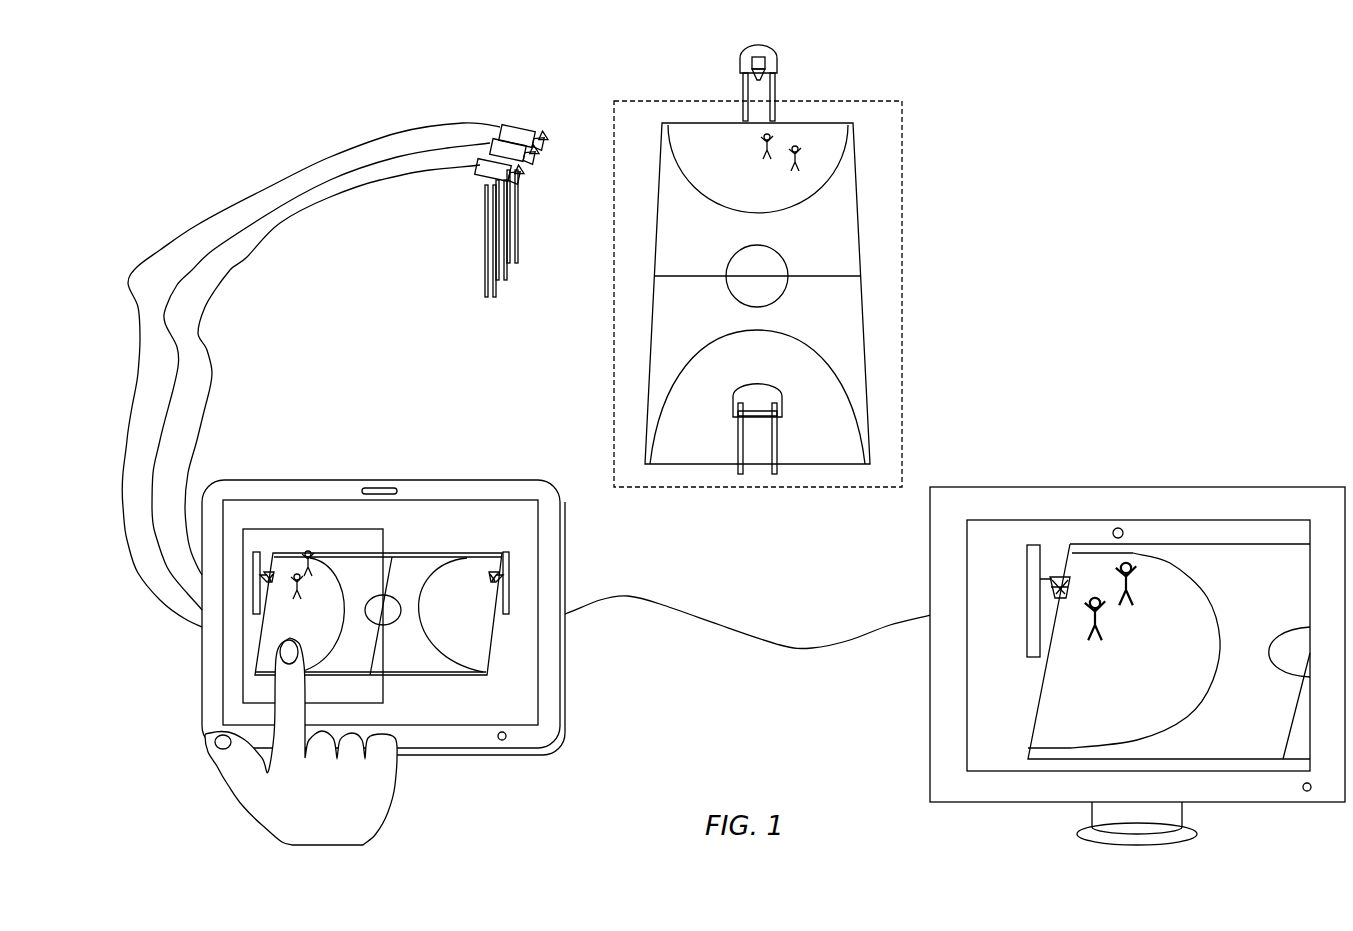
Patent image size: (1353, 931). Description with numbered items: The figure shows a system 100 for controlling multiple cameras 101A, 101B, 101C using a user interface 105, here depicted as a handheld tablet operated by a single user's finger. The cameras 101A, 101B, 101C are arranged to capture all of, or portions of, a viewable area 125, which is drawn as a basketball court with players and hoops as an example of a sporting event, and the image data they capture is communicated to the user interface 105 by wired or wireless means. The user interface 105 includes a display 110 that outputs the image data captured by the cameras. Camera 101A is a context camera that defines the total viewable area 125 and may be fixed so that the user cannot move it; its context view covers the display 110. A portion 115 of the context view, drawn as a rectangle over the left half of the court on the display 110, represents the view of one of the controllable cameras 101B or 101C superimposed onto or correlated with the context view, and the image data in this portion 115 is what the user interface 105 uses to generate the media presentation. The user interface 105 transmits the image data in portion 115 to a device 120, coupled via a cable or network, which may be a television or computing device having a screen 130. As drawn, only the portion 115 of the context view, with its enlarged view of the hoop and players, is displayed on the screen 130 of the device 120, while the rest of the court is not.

The system 100 is at (1142, 205).
The context camera 101A is at (522, 187).
The controllable camera 101B is at (538, 168).
The controllable camera 101C is at (530, 128).
The user interface 105 is at (506, 480).
The display 110 is at (414, 500).
The portion 115 is at (307, 529).
The device 120 is at (1168, 487).
The viewable area 125 is at (902, 273).
The screen 130 is at (1072, 519).